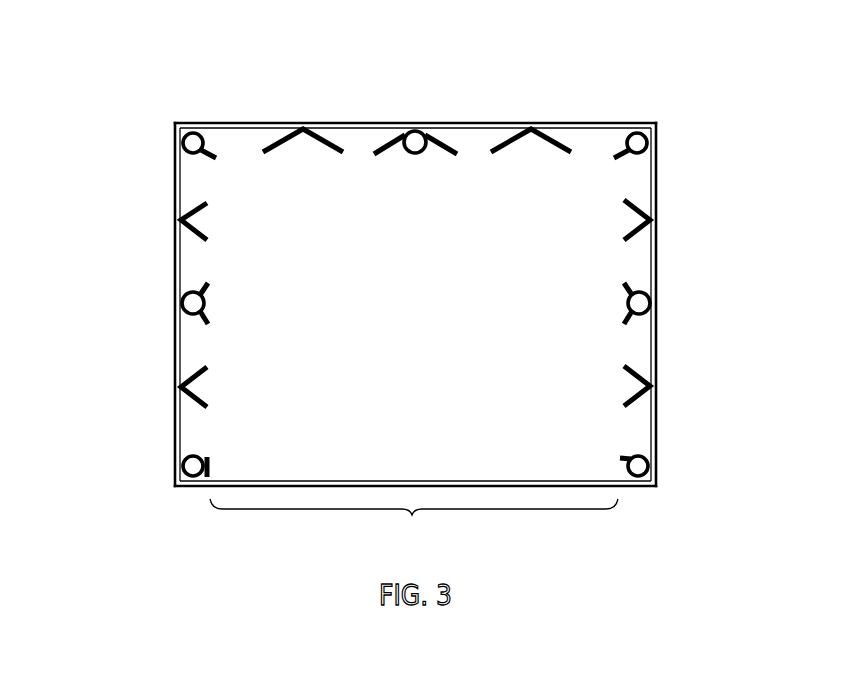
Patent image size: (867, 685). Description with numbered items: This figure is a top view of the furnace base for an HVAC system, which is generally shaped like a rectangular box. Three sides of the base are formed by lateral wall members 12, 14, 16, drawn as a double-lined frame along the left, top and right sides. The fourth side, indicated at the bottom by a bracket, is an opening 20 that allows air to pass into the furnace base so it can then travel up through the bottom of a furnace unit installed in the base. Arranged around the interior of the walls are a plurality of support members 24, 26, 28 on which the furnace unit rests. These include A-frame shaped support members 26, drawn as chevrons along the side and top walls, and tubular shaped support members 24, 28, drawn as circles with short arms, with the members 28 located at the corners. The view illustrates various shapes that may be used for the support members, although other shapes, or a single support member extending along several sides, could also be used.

The lateral wall member 12 is at (177, 360).
The lateral wall member 14 is at (352, 122).
The lateral wall member 16 is at (657, 350).
The opening 20 is at (415, 516).
The tubular shaped support member 24 is at (442, 130).
The A-frame shaped support member 26 is at (262, 130).
The tubular shaped support member 28 is at (177, 157).